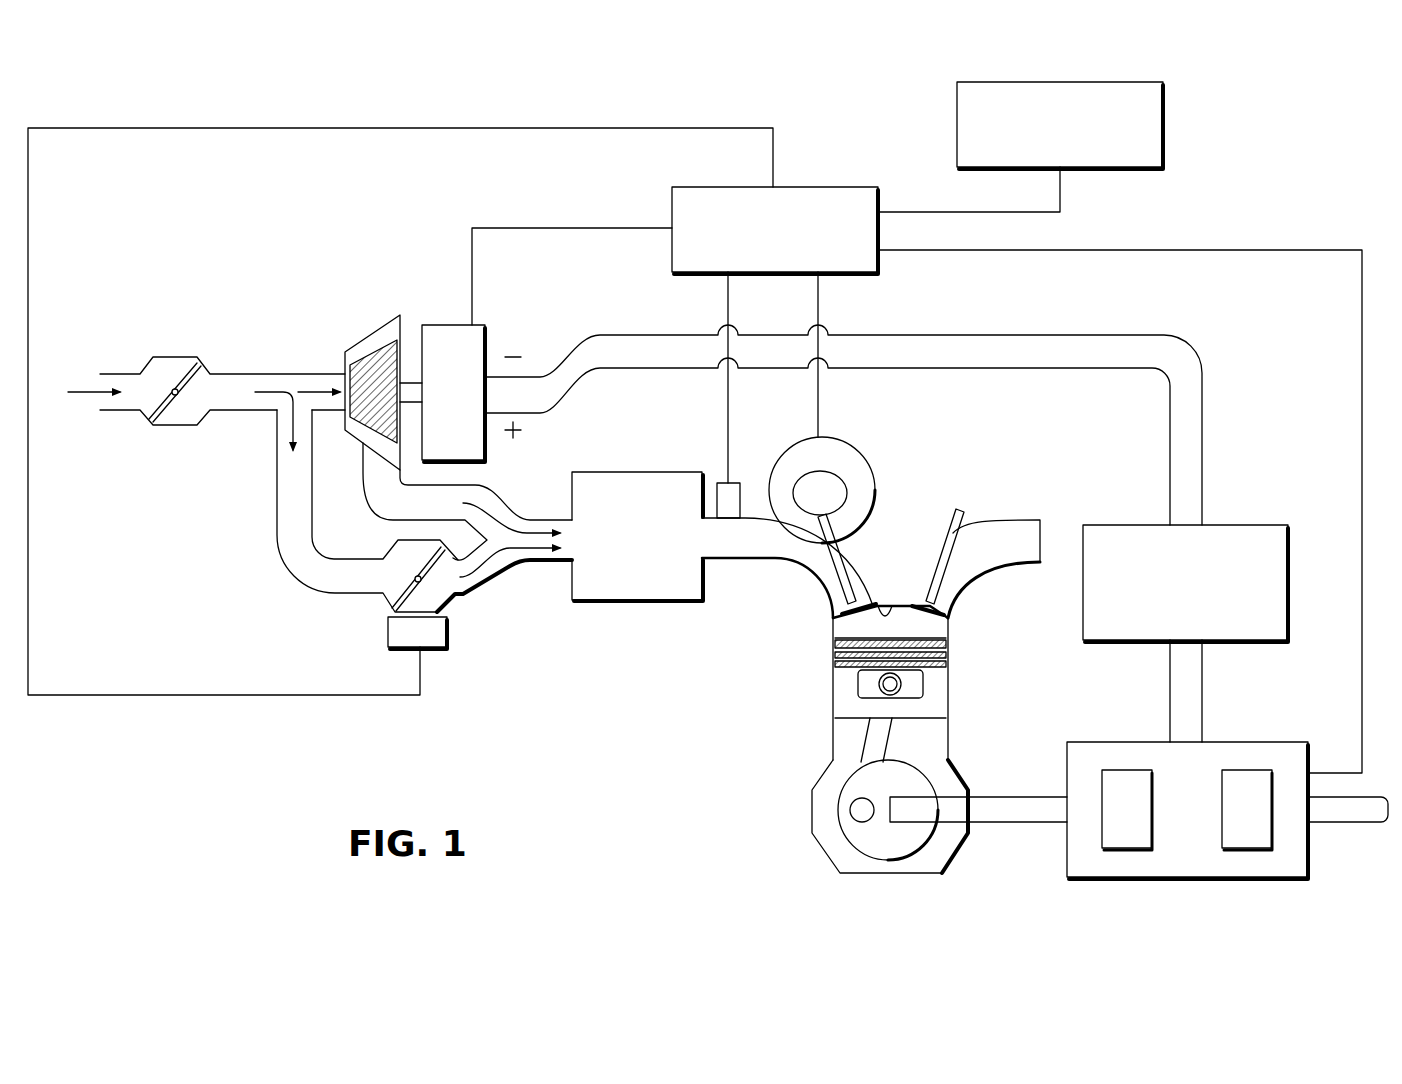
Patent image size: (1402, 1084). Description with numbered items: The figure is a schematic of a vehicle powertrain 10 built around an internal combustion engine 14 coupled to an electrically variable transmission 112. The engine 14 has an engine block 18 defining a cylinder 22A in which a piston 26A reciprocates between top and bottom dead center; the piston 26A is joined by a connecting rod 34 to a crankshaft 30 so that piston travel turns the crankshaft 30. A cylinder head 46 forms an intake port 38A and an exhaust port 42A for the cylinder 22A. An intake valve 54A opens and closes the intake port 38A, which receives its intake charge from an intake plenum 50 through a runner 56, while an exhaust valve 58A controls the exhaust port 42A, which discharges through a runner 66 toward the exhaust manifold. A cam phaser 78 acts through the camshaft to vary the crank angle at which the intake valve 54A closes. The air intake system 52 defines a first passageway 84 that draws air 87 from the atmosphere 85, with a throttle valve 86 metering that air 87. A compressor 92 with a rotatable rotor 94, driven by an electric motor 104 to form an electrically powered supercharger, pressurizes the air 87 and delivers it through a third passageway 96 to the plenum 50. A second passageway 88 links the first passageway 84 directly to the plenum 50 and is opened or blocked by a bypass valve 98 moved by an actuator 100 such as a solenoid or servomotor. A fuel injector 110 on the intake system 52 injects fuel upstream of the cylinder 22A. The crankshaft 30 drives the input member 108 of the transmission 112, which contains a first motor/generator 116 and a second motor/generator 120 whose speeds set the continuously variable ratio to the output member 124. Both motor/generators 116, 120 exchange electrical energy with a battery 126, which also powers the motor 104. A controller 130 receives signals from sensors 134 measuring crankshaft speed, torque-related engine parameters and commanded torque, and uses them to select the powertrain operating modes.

The vehicle powertrain 10 is at (222, 228).
The internal combustion engine 14 is at (710, 722).
The engine block 18 is at (950, 737).
The cylinder 22A is at (845, 718).
The piston 26A is at (938, 693).
The crankshaft 30 is at (883, 848).
The connecting rod 34 is at (858, 744).
The intake port 38A is at (891, 600).
The exhaust port 42A is at (945, 634).
The cylinder head 46 is at (899, 600).
The intake plenum 50 is at (632, 472).
The air intake system 52 is at (285, 606).
The intake valve 54A is at (835, 600).
The runner 56 is at (790, 571).
The exhaust valve 58A is at (955, 580).
The runner 66 is at (1013, 520).
The cam phaser 78 is at (790, 449).
The first passageway 84 is at (118, 376).
The atmosphere 85 is at (95, 499).
The throttle valve 86 is at (185, 370).
The air 87 is at (82, 396).
The second passageway 88 is at (348, 584).
The compressor 92 is at (360, 343).
The rotor 94 is at (376, 350).
The third passageway 96 is at (459, 500).
The bypass valve 98 is at (468, 590).
The actuator 100 is at (448, 632).
The electric motor 104 is at (445, 337).
The input member 108 is at (996, 825).
The fuel injector 110 is at (722, 483).
The electrically variable transmission 112 is at (1185, 878).
The first motor/generator 116 is at (1121, 852).
The second motor/generator 120 is at (1238, 852).
The output member 124 is at (1342, 824).
The battery 126 is at (1252, 523).
The controller 130 is at (843, 187).
The sensors 134 is at (1165, 127).